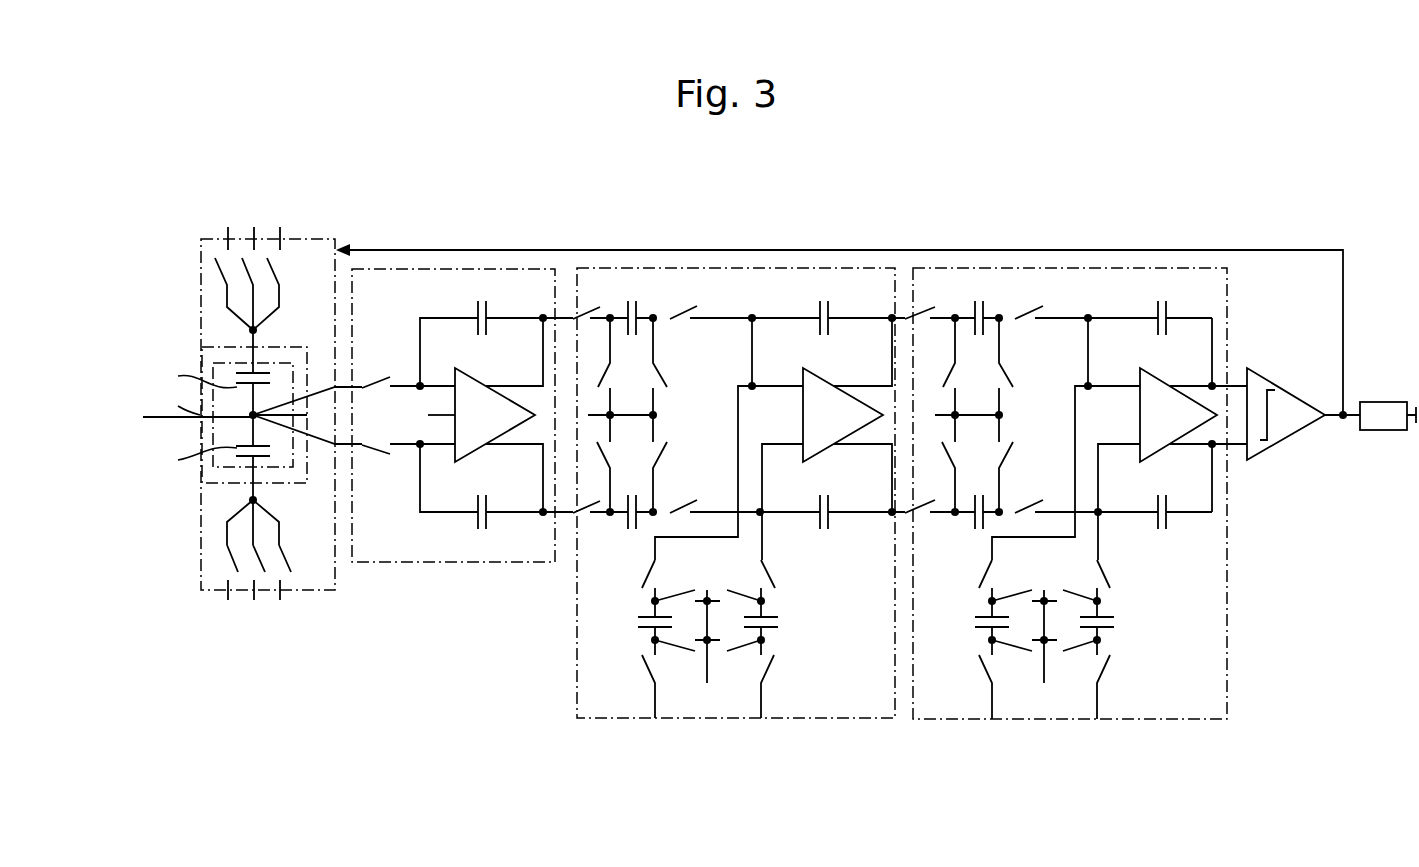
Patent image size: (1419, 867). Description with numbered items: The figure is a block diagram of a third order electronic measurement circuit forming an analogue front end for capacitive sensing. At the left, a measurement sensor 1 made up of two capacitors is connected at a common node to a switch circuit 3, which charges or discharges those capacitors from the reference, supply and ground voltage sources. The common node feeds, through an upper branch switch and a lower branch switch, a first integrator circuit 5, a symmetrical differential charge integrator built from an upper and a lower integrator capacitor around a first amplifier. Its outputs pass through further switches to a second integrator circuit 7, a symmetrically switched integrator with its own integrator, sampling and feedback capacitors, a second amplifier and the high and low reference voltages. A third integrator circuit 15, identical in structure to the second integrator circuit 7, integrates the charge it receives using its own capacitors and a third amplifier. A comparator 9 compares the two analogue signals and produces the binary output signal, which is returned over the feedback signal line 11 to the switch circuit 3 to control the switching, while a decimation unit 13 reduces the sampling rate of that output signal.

The measurement sensor 1 is at (204, 370).
The switch circuit 3 is at (198, 590).
The first integrator circuit 5 is at (490, 570).
The second integrator circuit 7 is at (568, 667).
The comparator 9 is at (1293, 392).
The feedback signal line 11 is at (770, 250).
The decimation unit 13 is at (1373, 432).
The third integrator circuit 15 is at (904, 667).